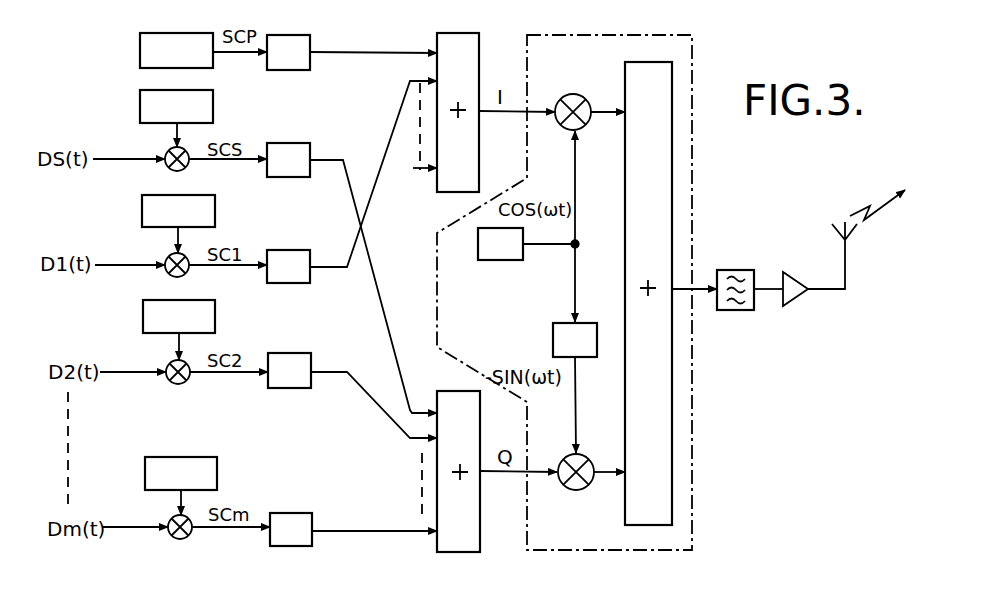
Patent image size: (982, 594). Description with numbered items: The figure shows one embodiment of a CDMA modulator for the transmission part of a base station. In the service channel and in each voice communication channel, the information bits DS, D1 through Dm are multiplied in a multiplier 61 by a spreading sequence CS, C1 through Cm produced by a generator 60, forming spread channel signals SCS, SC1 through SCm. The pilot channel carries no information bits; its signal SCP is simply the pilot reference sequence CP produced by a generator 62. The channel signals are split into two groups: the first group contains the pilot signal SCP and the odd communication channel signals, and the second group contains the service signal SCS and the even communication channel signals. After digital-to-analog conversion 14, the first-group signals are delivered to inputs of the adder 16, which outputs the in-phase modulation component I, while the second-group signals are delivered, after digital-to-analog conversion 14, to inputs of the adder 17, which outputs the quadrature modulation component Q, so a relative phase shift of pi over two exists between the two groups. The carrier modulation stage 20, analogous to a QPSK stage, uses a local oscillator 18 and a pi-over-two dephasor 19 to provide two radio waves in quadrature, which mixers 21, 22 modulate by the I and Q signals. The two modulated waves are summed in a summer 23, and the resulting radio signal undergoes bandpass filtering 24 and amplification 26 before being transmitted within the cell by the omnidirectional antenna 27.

The digital-to-analog conversion 14 is at (303, 72).
The adder 16 is at (479, 45).
The adder 17 is at (482, 552).
The local oscillator 18 is at (492, 262).
The π/2 dephasor 19 is at (553, 341).
The carrier modulation stage 20 is at (692, 143).
The mixer 21 is at (573, 94).
The mixer 22 is at (568, 490).
The summer 23 is at (672, 474).
The bandpass filtering 24 is at (738, 310).
The amplification 26 is at (793, 302).
The omnidirectional antenna 27 is at (848, 243).
The generator 60 is at (140, 102).
The multiplier 61 is at (166, 153).
The generator 62 is at (140, 42).